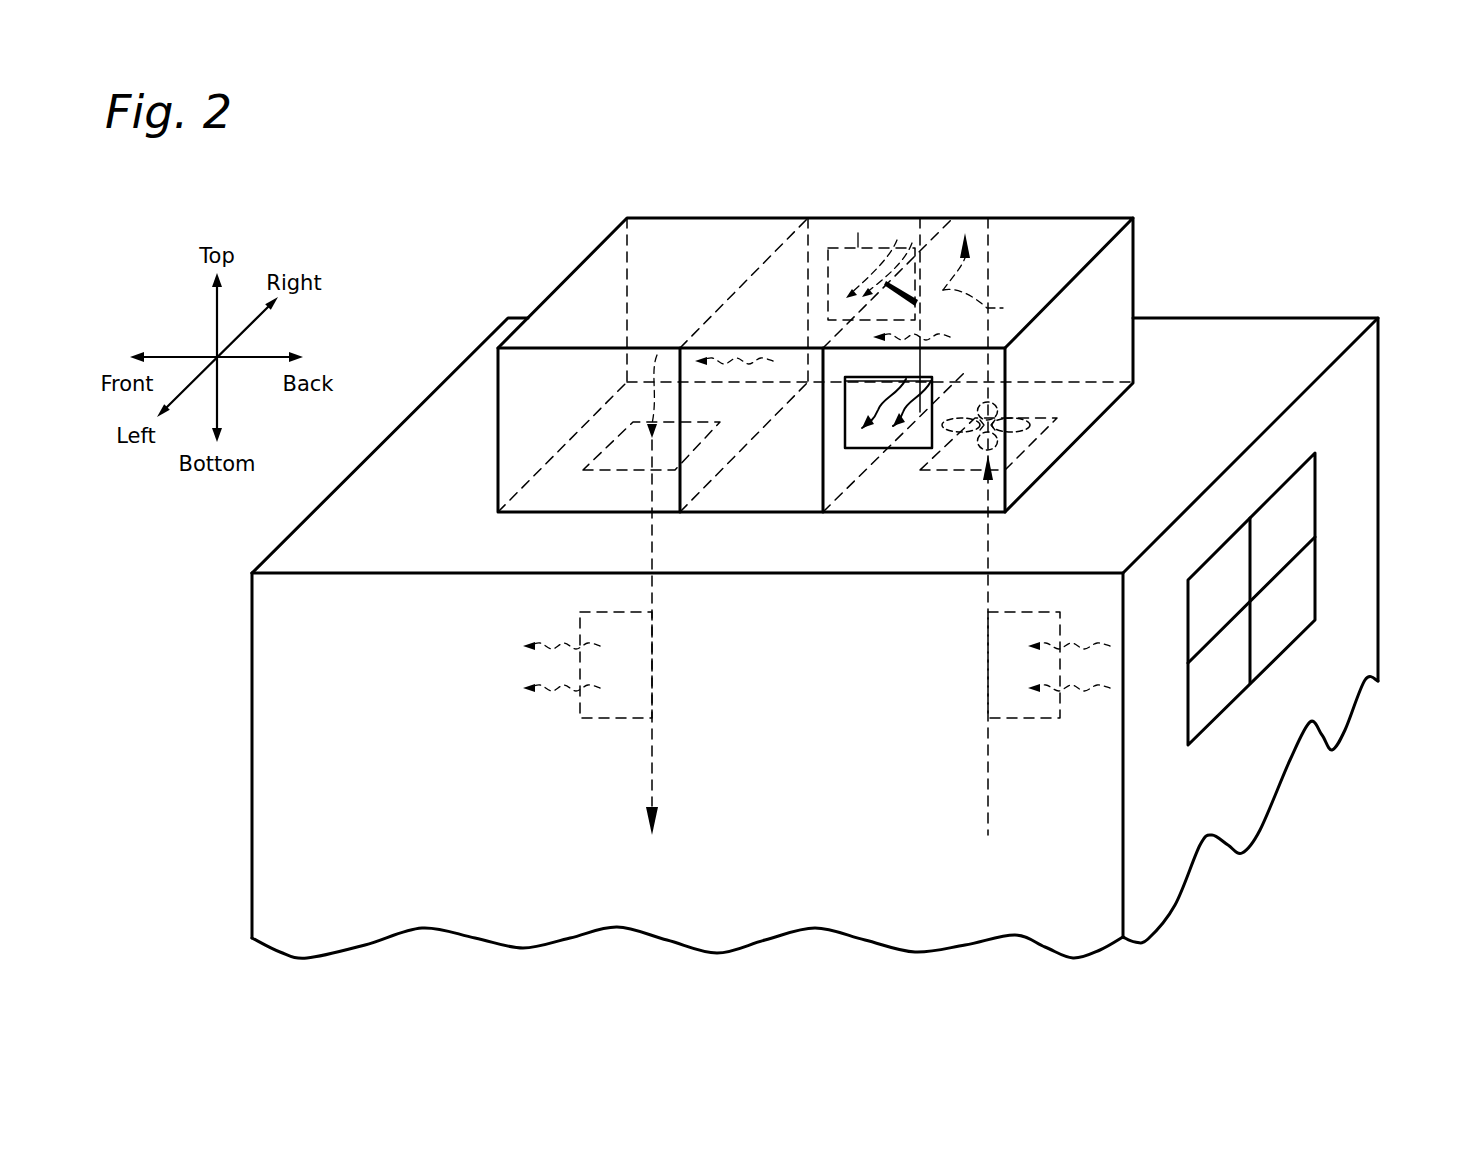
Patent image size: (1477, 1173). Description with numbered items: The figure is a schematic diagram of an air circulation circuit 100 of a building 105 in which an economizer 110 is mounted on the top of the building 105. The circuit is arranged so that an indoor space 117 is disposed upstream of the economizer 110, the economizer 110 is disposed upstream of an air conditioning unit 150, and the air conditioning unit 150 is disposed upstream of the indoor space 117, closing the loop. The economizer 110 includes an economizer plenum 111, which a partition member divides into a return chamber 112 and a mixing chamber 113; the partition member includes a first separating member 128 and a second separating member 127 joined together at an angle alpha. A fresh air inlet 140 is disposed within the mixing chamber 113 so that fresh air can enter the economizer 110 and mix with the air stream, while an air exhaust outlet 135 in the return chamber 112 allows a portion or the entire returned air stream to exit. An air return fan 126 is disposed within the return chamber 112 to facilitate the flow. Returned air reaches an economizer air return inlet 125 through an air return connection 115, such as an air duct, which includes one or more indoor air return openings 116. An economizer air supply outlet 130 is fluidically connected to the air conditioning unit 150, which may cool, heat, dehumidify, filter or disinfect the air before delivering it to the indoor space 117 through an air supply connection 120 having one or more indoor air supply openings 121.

The air circulation circuit 100 is at (1283, 189).
The building 105 is at (1360, 487).
The economizer 110 is at (808, 212).
The economizer plenum 111 is at (1133, 247).
The return chamber 112 is at (1037, 240).
The mixing chamber 113 is at (920, 233).
The air return connection 115 is at (987, 600).
The indoor air return opening 116 is at (1017, 719).
The indoor space 117 is at (1147, 830).
The air supply connection 120 is at (653, 758).
The indoor air supply opening 121 is at (615, 722).
The economizer air return inlet 125 is at (1037, 458).
The air return fan 126 is at (1030, 420).
The second separating member 127 is at (823, 473).
The first separating member 128 is at (948, 235).
The economizer air supply outlet 130 is at (680, 470).
The air exhaust outlet 135 is at (900, 452).
The fresh air inlet 140 is at (858, 233).
The air conditioning unit 150 is at (808, 212).